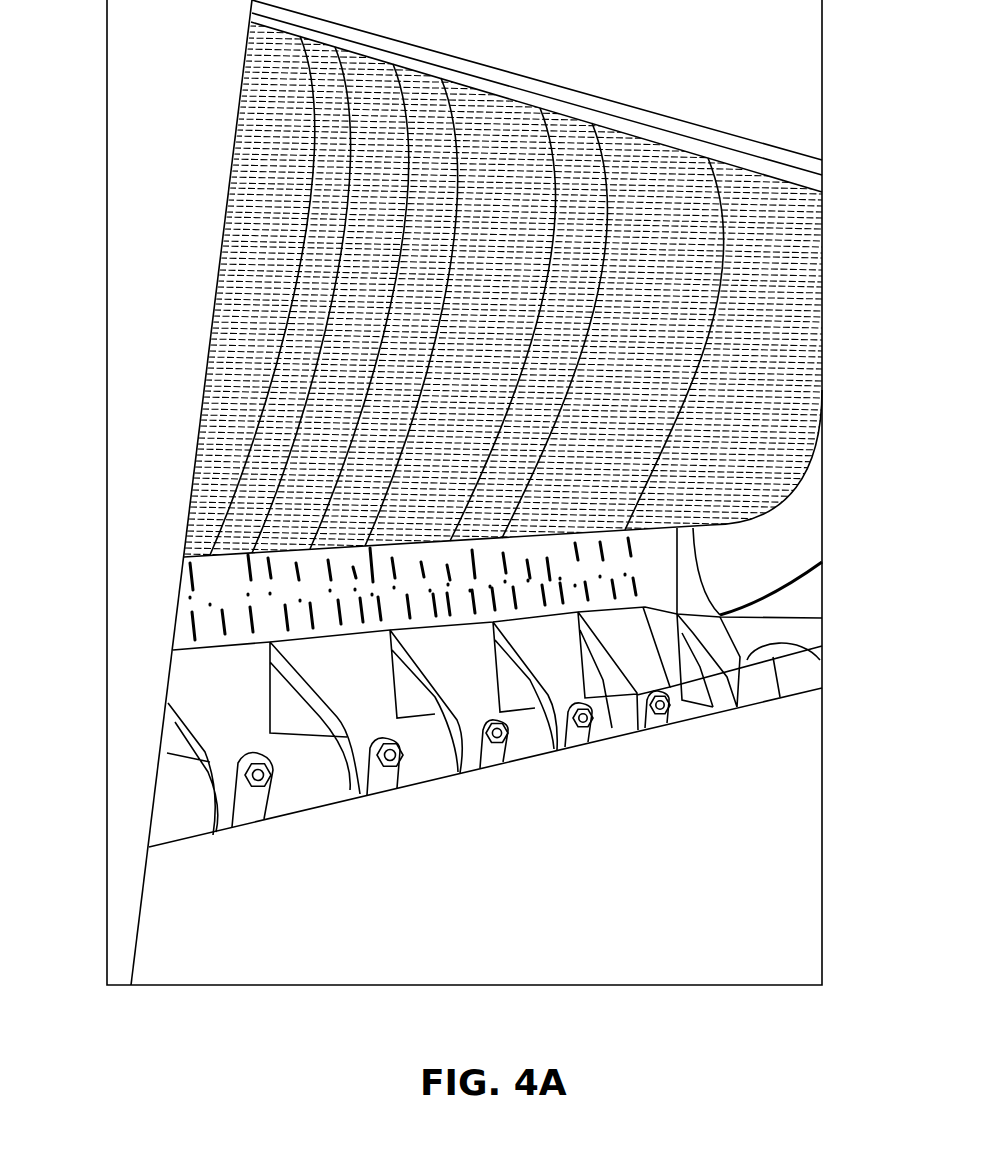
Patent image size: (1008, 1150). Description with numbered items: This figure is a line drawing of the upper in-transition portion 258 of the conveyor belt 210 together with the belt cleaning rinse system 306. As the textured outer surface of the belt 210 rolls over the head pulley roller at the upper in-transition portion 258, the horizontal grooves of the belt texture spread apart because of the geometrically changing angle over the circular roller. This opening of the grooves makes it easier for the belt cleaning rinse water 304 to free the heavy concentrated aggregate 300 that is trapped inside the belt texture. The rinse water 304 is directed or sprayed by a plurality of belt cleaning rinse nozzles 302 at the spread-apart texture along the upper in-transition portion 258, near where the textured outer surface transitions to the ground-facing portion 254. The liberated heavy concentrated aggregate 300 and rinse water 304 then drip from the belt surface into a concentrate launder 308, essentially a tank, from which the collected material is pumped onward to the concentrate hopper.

The conveyor belt 210 is at (697, 298).
The upper in-transition portion 258 is at (306, 356).
The heavy concentrated aggregate 300 is at (778, 346).
The ground-facing portion 254 is at (700, 528).
The belt cleaning rinse water 304 is at (240, 592).
The belt cleaning rinse nozzles 302 is at (228, 710).
The belt cleaning rinse system 306 is at (672, 775).
The concentrate launder 308 is at (620, 870).